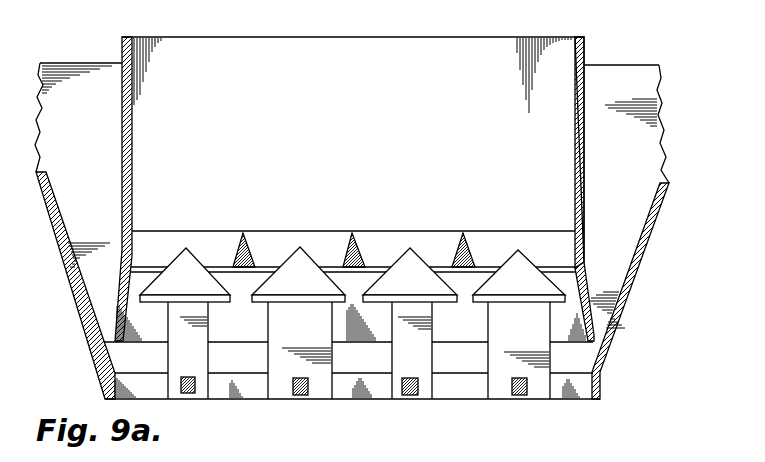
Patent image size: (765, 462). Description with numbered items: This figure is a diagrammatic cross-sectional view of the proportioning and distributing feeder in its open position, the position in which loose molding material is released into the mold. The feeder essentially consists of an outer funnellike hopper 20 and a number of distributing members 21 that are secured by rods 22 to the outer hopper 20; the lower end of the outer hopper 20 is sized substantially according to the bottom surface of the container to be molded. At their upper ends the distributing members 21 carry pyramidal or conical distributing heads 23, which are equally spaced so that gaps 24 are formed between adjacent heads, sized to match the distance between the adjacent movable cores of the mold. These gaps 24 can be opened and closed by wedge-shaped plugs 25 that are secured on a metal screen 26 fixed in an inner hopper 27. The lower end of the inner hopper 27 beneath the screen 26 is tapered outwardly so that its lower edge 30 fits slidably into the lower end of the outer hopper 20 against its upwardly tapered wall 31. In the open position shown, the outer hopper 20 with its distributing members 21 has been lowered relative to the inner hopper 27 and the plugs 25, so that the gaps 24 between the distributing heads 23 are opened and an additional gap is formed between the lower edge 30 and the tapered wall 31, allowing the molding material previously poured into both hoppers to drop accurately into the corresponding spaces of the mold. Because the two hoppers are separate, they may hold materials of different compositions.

The outer funnellike hopper 20 is at (623, 72).
The distributing members 21 is at (273, 357).
The rods 22 is at (293, 393).
The distributing heads 23 is at (186, 252).
The gaps 24 is at (245, 291).
The wedge-shaped plugs 25 is at (248, 250).
The metal screen 26 is at (342, 258).
The inner hopper 27 is at (140, 117).
The lower edge 30 is at (590, 325).
The upwardly tapered wall 31 is at (625, 303).